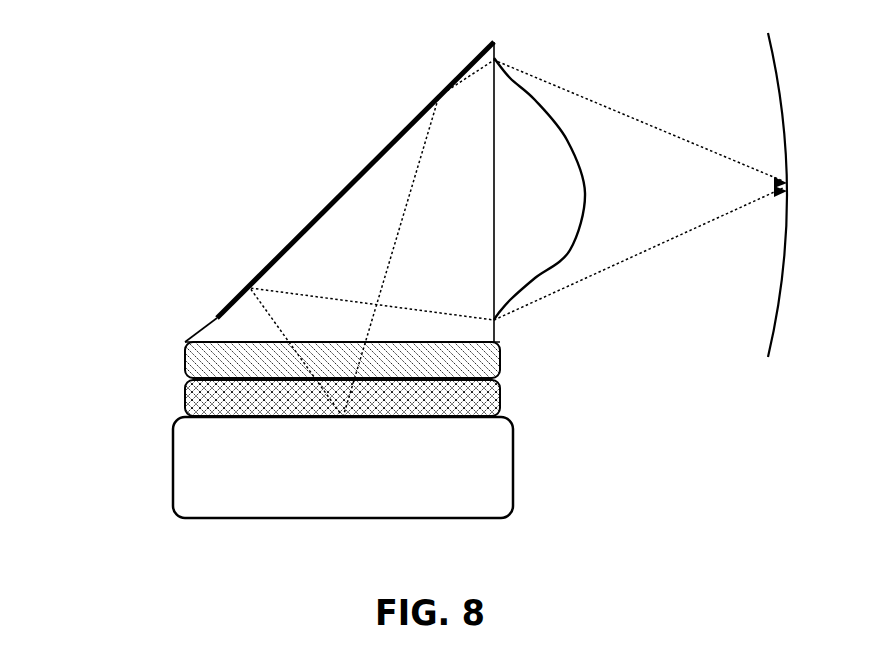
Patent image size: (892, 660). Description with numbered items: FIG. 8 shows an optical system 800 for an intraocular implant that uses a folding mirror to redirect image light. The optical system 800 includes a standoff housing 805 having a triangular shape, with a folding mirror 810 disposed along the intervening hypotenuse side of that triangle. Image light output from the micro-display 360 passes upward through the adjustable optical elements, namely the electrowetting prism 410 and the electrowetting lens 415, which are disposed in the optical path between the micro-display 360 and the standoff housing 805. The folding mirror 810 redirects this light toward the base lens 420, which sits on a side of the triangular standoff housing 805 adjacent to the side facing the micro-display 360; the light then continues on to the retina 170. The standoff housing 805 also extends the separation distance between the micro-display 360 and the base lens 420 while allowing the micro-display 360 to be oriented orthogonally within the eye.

The optical system 800 is at (145, 81).
The standoff housing 805 is at (455, 252).
The folding mirror 810 is at (318, 218).
The base lens 420 is at (552, 208).
The electrowetting prism 410 is at (185, 352).
The electrowetting lens 415 is at (185, 398).
The micro-display 360 is at (352, 482).
The retina 170 is at (780, 293).